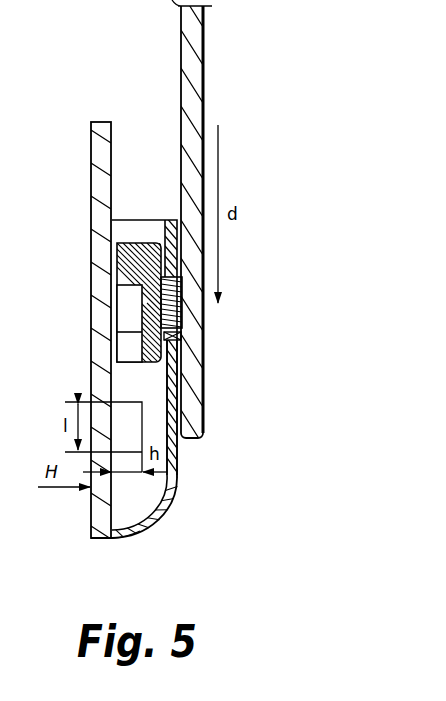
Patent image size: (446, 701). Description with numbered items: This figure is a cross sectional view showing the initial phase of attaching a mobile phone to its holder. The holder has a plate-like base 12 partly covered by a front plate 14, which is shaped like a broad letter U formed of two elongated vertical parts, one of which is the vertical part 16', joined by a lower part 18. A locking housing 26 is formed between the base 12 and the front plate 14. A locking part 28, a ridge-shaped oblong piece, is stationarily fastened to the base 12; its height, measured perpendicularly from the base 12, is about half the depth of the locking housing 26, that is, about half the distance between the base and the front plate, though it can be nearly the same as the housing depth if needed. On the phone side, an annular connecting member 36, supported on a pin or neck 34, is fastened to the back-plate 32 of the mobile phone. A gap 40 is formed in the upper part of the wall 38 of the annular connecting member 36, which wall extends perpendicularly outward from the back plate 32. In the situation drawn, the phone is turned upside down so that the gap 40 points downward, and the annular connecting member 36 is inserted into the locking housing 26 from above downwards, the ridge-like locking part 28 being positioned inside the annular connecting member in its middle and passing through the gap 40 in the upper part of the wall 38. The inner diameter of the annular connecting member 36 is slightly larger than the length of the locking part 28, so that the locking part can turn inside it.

The base 12 is at (97, 153).
The front plate 14 is at (177, 467).
The elongated vertical part 16' is at (172, 407).
The lower part 18 is at (128, 540).
The locking housing 26 is at (140, 500).
The locking part 28 is at (182, 495).
The back-plate 32 is at (195, 70).
The pin or neck 34 is at (172, 300).
The annular connecting member 36 is at (180, 343).
The wall 38 is at (135, 247).
The gap 40 is at (123, 342).